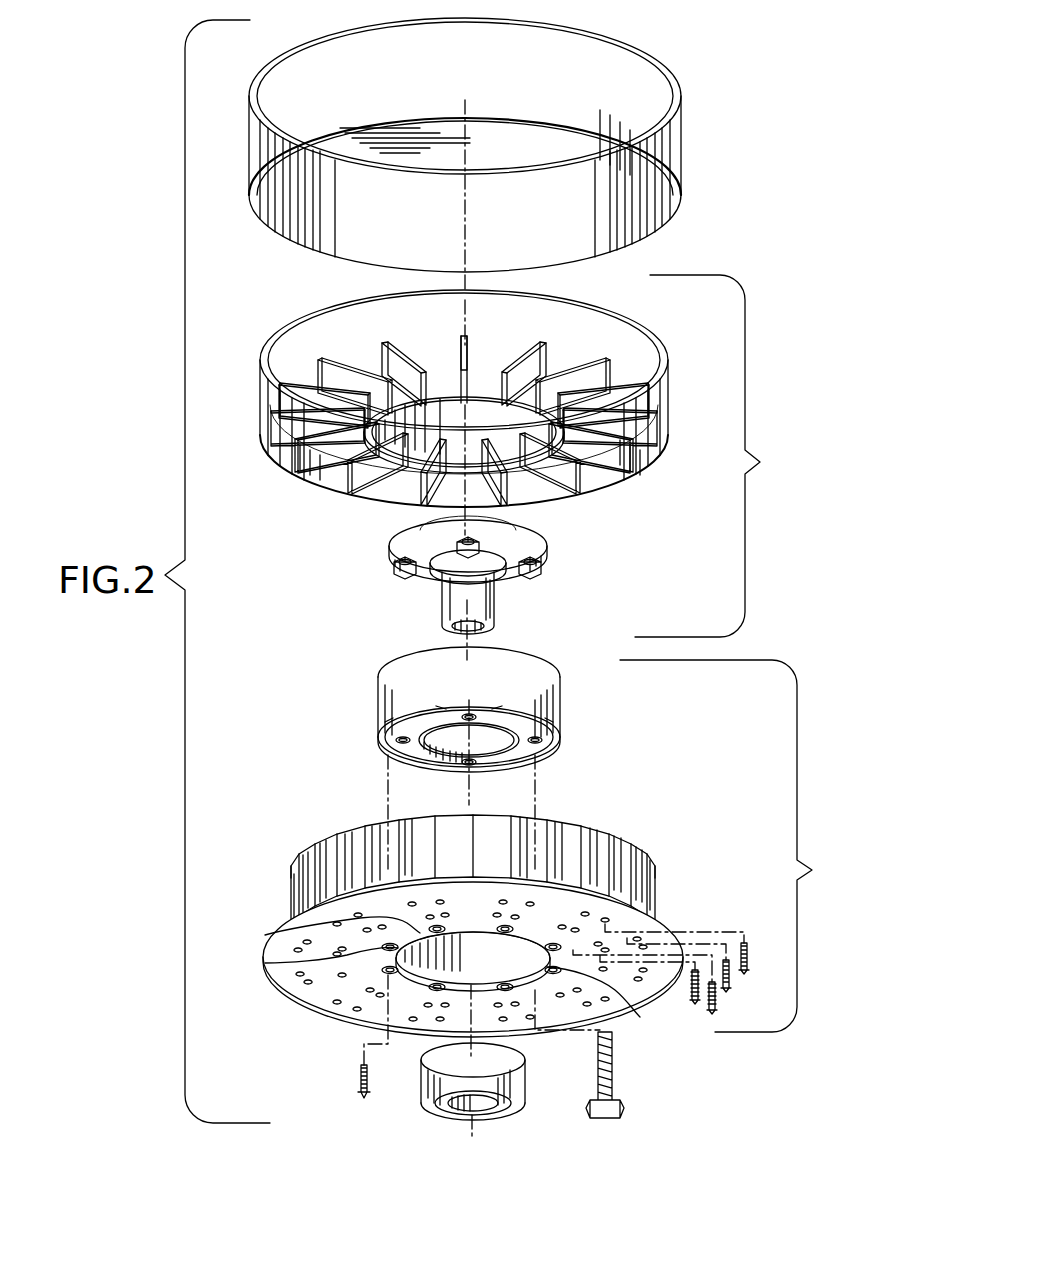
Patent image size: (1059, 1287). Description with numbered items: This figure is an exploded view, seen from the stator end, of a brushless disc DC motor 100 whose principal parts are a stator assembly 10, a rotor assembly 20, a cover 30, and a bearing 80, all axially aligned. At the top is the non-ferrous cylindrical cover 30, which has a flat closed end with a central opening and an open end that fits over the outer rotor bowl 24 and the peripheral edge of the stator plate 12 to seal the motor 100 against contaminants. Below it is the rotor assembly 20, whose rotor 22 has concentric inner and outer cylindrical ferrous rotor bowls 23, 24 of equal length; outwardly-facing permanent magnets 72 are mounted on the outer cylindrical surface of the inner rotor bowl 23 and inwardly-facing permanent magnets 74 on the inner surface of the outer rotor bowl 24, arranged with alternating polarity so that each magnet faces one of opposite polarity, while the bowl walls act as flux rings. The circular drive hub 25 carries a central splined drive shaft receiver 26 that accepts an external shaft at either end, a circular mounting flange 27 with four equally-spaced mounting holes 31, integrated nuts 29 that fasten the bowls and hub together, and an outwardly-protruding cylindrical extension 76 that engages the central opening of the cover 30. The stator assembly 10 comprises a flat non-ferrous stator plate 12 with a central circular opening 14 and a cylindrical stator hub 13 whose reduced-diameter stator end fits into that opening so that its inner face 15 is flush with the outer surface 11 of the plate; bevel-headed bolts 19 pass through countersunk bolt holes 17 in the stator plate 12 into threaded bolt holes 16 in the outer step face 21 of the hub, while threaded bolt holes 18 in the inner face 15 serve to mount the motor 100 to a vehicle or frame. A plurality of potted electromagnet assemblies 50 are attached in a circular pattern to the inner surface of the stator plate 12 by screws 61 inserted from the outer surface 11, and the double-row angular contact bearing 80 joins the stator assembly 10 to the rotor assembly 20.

The motor 100 is at (742, 36).
The cover 30 is at (689, 138).
The rotor assembly 20 is at (526, 695).
The rotor 22 is at (312, 300).
The outer cylindrical rotor bowl 24 is at (262, 410).
The inwardly-facing permanent magnets 74 is at (318, 462).
The outwardly-facing permanent magnets 72 is at (360, 458).
The inner cylindrical rotor bowl 23 is at (575, 465).
The cylindrical extension 76 is at (460, 530).
The drive hub 25 is at (482, 581).
The splined drive shaft receiver 26 is at (455, 608).
The circular mounting flange 27 is at (445, 572).
The nuts 29 is at (400, 546).
The mounting holes 31 is at (400, 566).
The stator assembly 10 is at (529, 883).
The stator hub 13 is at (469, 724).
The outer step face 21 is at (405, 722).
The threaded bolt holes 16 is at (392, 728).
The threaded bolt holes 18 is at (405, 752).
The inner face 15 is at (512, 765).
The electromagnet assemblies 50 is at (322, 846).
The outer surface 11 is at (448, 968).
The stator plate 12 is at (345, 1025).
The central circular opening 14 is at (300, 925).
The countersunk bolt holes 17 is at (382, 947).
The screws 61 is at (738, 975).
The bevel-headed bolts 19 is at (356, 1075).
The bearing 80 is at (512, 1062).